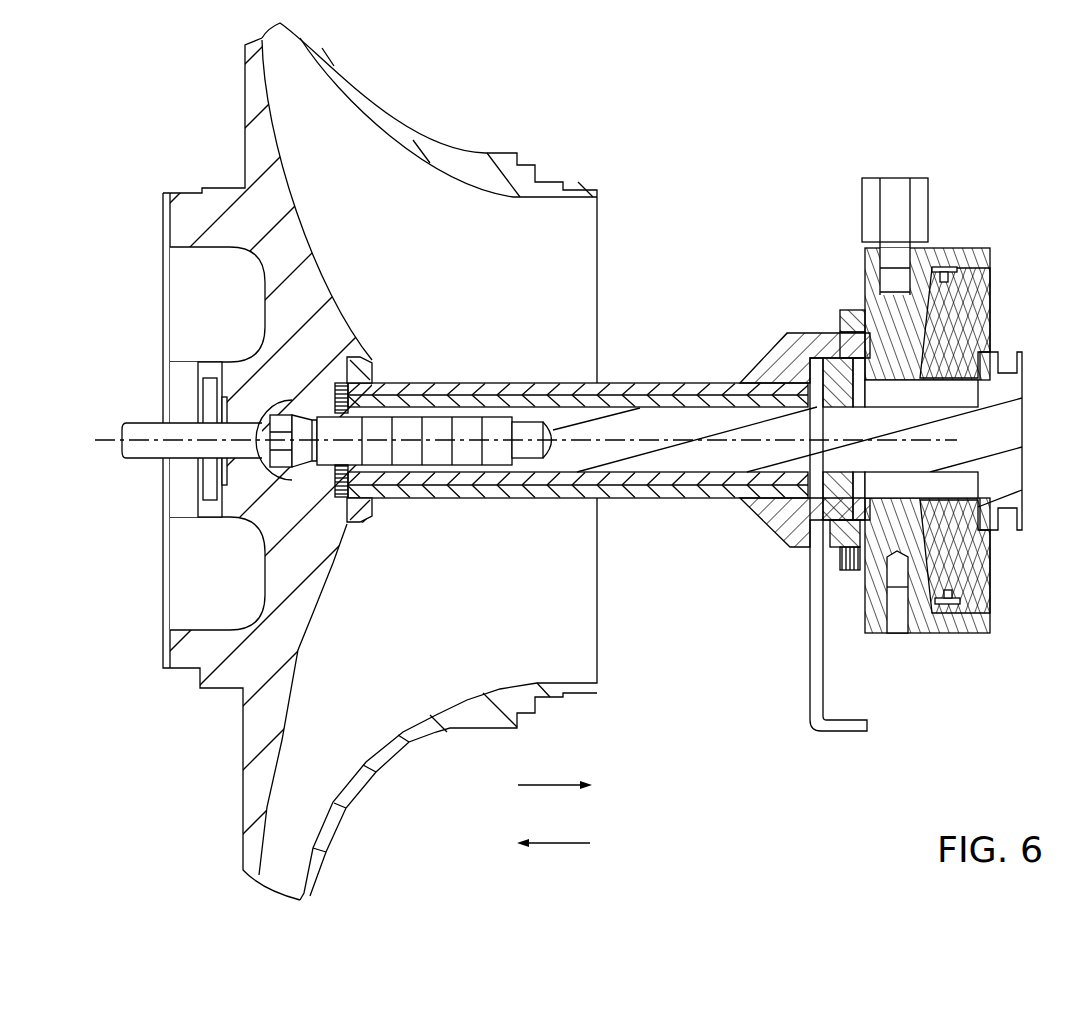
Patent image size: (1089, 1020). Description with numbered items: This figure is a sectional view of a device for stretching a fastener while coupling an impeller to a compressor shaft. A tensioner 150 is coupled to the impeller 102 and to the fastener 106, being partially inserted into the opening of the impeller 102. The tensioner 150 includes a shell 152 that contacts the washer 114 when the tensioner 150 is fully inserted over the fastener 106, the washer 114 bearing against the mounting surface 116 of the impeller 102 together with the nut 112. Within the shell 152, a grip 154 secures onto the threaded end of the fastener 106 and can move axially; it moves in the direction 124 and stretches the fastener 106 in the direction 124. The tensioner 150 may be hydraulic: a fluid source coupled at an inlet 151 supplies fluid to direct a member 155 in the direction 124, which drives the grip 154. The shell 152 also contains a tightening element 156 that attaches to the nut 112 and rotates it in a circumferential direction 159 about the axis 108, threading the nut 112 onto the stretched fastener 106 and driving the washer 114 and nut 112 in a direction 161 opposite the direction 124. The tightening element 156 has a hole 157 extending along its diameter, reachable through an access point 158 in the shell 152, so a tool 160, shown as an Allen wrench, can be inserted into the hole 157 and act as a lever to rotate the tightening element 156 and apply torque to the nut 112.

The impeller 102 is at (481, 204).
The fastener 106 is at (140, 423).
The axis 108 is at (603, 383).
The nut 112 is at (384, 383).
The washer 114 is at (347, 378).
The mounting surface 116 is at (345, 525).
The direction 124 is at (552, 786).
The tensioner 150 is at (969, 418).
The inlet 151 is at (915, 178).
The shell 152 is at (392, 500).
The grip 154 is at (565, 463).
The member 155 is at (968, 293).
The tightening element 156 is at (855, 572).
The hole 157 is at (795, 492).
The access point 158 is at (815, 548).
The circumferential direction 159 is at (258, 385).
The tool 160 is at (845, 732).
The direction 161 is at (560, 844).